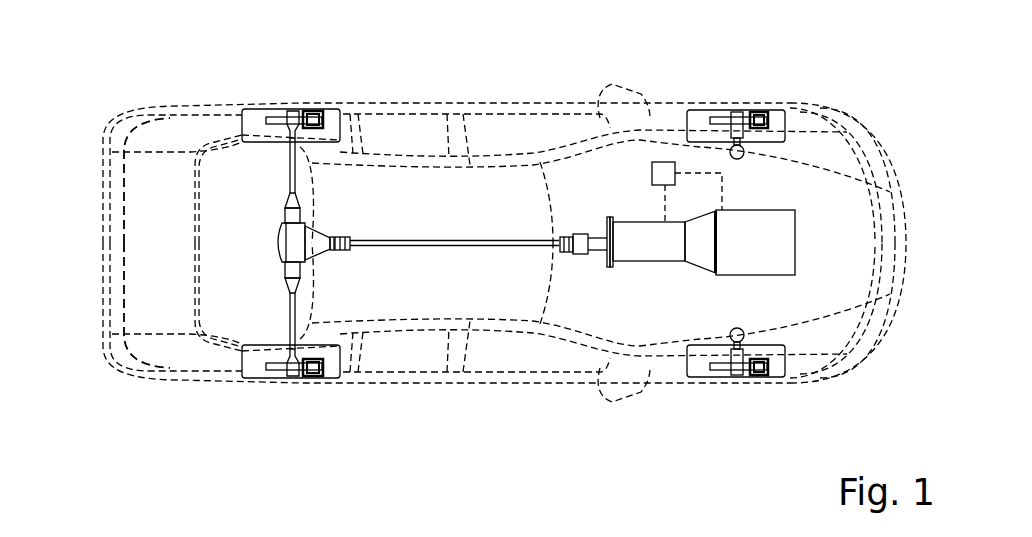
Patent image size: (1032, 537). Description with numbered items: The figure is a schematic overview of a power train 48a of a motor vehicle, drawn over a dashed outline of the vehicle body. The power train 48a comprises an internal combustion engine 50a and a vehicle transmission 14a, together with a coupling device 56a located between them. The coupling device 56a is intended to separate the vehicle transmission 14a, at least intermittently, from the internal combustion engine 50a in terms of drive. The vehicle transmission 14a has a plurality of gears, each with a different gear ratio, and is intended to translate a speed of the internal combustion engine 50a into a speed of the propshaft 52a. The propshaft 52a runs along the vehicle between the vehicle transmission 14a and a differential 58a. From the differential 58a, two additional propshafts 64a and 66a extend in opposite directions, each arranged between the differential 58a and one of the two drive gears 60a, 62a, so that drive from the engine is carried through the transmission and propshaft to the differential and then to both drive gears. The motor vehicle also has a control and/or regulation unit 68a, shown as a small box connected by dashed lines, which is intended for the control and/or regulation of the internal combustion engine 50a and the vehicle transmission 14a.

The power train 48a is at (452, 186).
The internal combustion engine 50a is at (757, 238).
The vehicle transmission 14a is at (637, 243).
The coupling device 56a is at (703, 245).
The propshaft 52a is at (397, 246).
The differential 58a is at (290, 243).
The additional propshaft 64a is at (290, 170).
The additional propshaft 66a is at (290, 312).
The drive gear 60a is at (257, 120).
The drive gear 62a is at (257, 372).
The control and/or regulation unit 68a is at (666, 172).